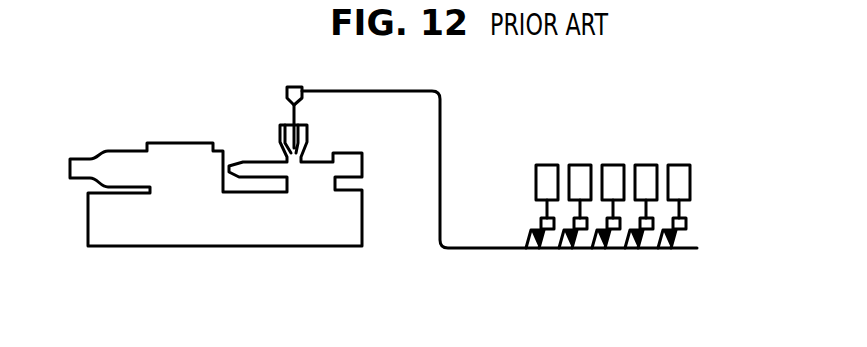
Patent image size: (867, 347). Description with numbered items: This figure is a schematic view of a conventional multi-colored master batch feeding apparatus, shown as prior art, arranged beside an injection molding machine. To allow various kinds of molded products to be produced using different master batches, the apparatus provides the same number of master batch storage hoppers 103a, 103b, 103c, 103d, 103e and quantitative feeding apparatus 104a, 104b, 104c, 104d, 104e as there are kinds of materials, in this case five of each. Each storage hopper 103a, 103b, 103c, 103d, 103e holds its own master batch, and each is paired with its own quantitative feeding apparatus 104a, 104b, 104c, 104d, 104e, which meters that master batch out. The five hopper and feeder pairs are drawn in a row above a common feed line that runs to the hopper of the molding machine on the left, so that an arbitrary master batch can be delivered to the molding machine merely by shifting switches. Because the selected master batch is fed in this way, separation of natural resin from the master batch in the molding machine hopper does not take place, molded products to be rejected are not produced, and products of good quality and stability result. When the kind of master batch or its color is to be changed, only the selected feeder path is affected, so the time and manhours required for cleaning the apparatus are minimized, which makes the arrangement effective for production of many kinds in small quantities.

The master batch storage hopper 103a is at (547, 163).
The master batch storage hopper 103b is at (578, 164).
The master batch storage hopper 103c is at (612, 164).
The master batch storage hopper 103d is at (645, 164).
The master batch storage hopper 103e is at (678, 164).
The quantitative feeding apparatus 104a is at (542, 250).
The quantitative feeding apparatus 104b is at (577, 250).
The quantitative feeding apparatus 104c is at (613, 250).
The quantitative feeding apparatus 104d is at (647, 250).
The quantitative feeding apparatus 104e is at (685, 250).